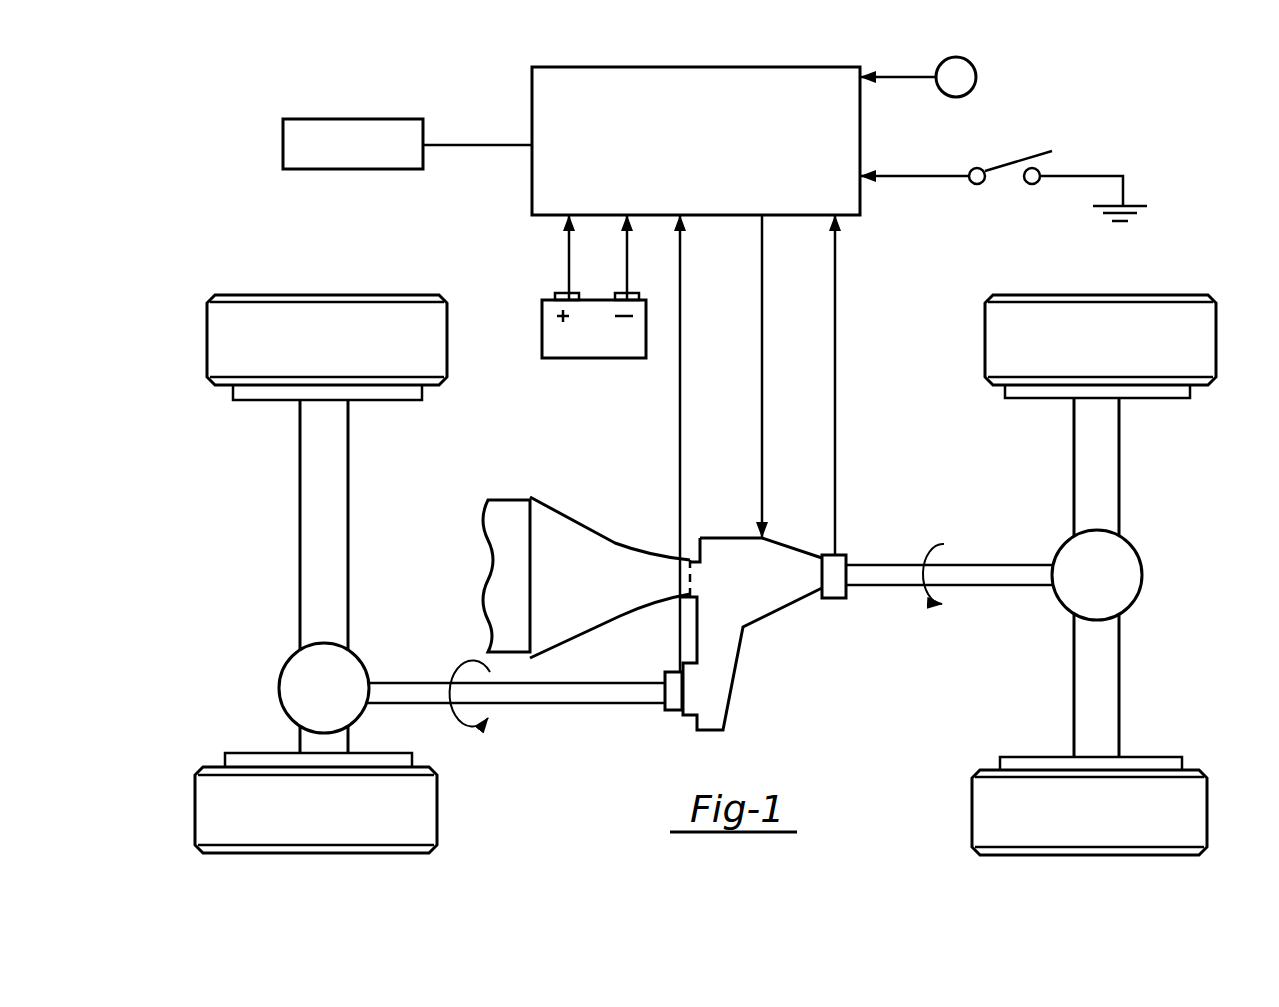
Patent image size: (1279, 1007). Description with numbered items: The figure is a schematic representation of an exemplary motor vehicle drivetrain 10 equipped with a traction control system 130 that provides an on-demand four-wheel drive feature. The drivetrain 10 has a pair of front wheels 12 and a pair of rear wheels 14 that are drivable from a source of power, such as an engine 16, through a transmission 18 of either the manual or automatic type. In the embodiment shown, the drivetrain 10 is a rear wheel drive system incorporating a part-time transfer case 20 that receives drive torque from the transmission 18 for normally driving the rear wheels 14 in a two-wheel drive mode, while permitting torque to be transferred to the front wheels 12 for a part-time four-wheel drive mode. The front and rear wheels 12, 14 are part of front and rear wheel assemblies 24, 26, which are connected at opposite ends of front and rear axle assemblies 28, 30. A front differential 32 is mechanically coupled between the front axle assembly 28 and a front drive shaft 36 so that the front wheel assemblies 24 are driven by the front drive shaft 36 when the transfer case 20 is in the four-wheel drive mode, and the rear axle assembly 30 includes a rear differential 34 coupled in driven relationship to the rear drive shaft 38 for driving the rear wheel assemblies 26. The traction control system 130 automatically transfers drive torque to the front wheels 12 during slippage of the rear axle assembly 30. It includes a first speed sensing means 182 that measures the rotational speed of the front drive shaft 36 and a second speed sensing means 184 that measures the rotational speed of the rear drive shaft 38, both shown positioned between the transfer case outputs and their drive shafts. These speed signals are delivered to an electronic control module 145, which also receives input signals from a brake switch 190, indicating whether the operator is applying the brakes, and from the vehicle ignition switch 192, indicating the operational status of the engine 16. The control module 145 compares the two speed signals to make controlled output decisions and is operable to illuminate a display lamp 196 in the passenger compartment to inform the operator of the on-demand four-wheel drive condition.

The motor vehicle drivetrain 10 is at (876, 656).
The front wheels 12 is at (328, 300).
The rear wheels 14 is at (1133, 310).
The engine 16 is at (507, 510).
The transmission 18 is at (570, 522).
The part-time transfer case 20 is at (775, 595).
The front wheel assemblies 24 is at (375, 402).
The rear wheel assemblies 26 is at (1125, 400).
The front axle assembly 28 is at (298, 505).
The rear axle assembly 30 is at (1122, 485).
The front differential 32 is at (310, 673).
The rear differential 34 is at (1130, 556).
The front drive shaft 36 is at (580, 697).
The rear drive shaft 38 is at (1020, 580).
The traction control system 130 is at (878, 290).
The control module 145 is at (742, 66).
The first speed sensing means 182 is at (672, 712).
The second speed sensing means 184 is at (846, 553).
The brake switch 190 is at (1073, 120).
The ignition switch 192 is at (962, 60).
The display lamp 196 is at (345, 169).